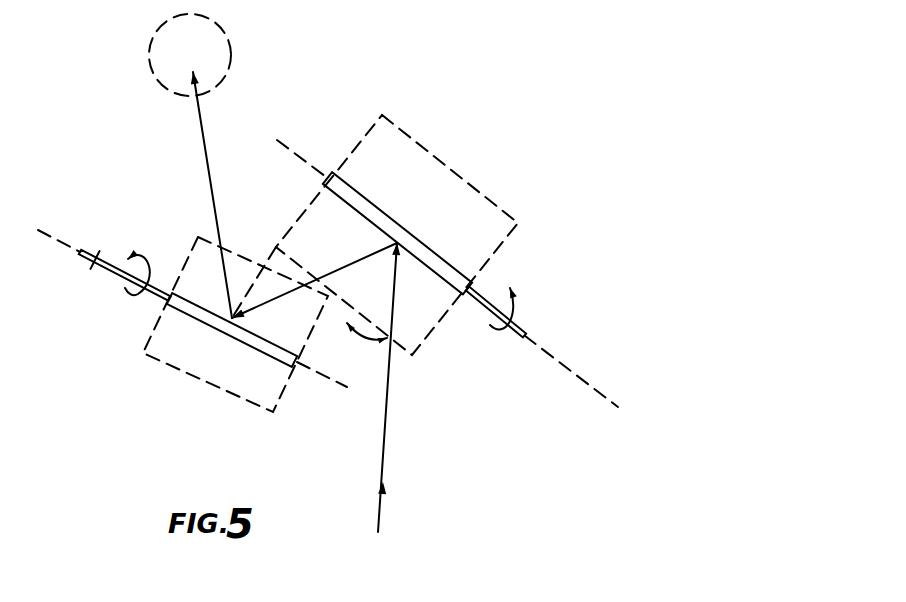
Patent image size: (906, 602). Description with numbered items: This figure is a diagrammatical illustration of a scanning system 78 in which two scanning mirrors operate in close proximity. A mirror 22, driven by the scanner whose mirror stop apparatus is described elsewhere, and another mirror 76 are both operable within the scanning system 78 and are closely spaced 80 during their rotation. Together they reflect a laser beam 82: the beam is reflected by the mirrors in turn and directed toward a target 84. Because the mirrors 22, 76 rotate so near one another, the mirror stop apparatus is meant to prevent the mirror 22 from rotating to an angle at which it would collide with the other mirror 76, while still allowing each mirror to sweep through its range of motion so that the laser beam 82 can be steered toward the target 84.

The mirror 22 is at (447, 253).
The another mirror 76 is at (173, 320).
The scanning system 78 is at (452, 132).
The close spacing 80 is at (330, 300).
The laser beam 82 is at (388, 443).
The target 84 is at (178, 55).